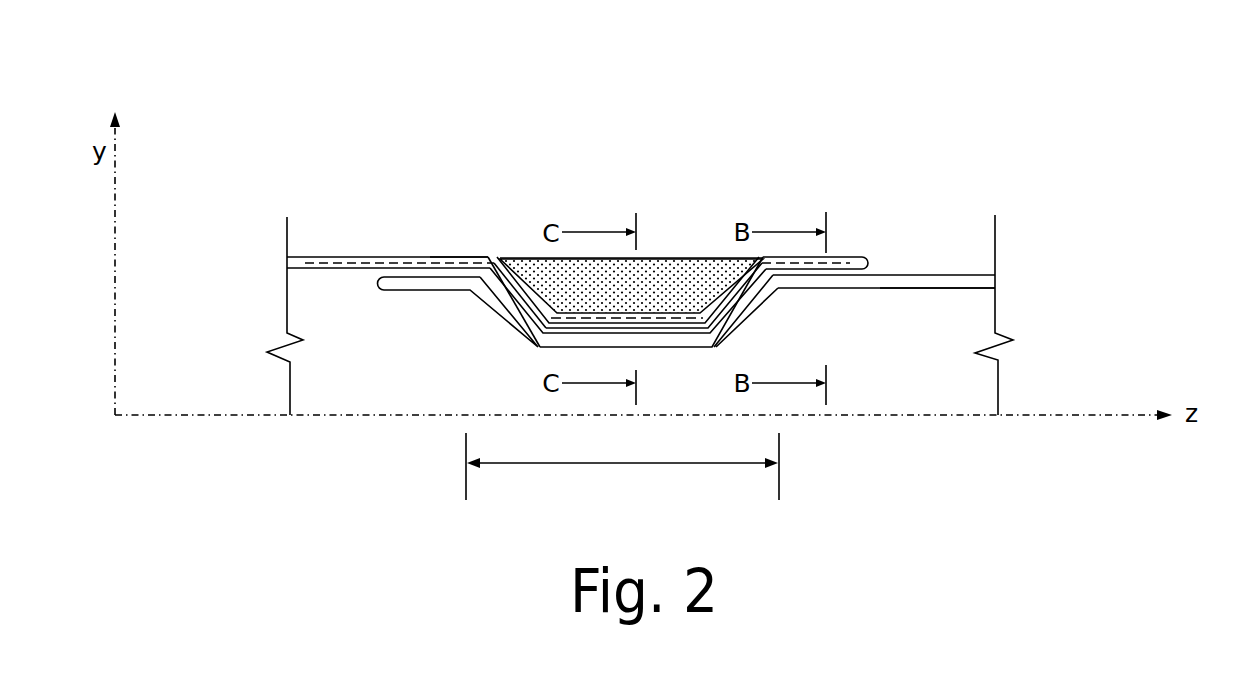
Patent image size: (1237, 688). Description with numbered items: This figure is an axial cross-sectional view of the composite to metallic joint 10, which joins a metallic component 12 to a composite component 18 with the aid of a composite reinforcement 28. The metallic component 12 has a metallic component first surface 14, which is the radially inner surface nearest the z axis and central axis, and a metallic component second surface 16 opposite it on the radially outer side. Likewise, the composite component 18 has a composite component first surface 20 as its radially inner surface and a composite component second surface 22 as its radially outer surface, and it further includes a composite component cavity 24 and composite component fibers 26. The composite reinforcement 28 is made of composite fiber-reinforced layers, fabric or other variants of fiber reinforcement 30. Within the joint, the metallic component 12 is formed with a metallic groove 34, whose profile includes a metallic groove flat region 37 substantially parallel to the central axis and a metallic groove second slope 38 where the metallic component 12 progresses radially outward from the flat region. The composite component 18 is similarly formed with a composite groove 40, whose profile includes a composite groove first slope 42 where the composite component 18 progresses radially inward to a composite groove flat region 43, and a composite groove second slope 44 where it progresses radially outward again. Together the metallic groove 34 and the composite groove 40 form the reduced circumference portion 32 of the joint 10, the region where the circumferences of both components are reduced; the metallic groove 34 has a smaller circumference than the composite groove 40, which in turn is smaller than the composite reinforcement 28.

The composite to metallic joint 10 is at (846, 115).
The metallic component 12 is at (905, 274).
The metallic component first surface 14 is at (953, 290).
The metallic component second surface 16 is at (956, 274).
The composite component 18 is at (408, 256).
The composite component first surface 20 is at (332, 270).
The composite component second surface 22 is at (332, 256).
The composite component cavity 24 is at (897, 378).
The composite component fibers 26 is at (453, 248).
The composite reinforcement 28 is at (650, 257).
The fiber reinforcement 30 is at (668, 247).
The reduced circumference portion 32 is at (622, 466).
The metallic groove 34 is at (543, 348).
The metallic groove flat region 37 is at (692, 350).
The metallic groove second slope 38 is at (507, 320).
The composite groove 40 is at (557, 310).
The composite groove first slope 42 is at (746, 288).
The composite groove flat region 43 is at (651, 331).
The composite groove second slope 44 is at (495, 287).